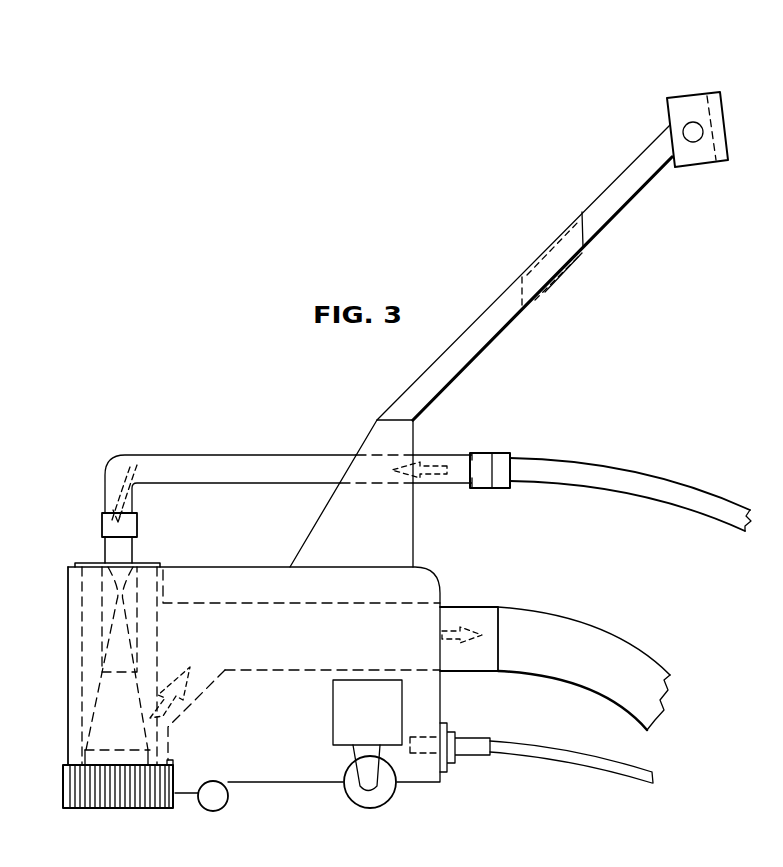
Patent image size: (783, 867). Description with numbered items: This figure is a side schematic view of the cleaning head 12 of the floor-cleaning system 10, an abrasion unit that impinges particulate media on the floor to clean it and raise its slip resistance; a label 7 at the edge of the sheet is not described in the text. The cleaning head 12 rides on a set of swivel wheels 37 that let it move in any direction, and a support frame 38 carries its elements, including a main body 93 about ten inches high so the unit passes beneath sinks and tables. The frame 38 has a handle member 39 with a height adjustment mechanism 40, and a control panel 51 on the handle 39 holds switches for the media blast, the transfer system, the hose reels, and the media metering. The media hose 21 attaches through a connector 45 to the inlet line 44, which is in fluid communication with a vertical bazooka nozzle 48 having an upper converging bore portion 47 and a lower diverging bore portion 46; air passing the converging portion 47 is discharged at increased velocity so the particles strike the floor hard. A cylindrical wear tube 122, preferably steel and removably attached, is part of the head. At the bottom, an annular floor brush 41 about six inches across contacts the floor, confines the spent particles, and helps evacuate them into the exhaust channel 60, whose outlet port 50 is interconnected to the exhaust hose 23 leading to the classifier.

The cleaning apparatus 10 is at (0, 306).
The floor surface 7 is at (9, 342).
The cleaning head 12 is at (247, 411).
The media hose 21 is at (693, 492).
The exhaust hose 23 is at (602, 643).
The swivel wheels 37 is at (216, 797).
The support frame 38 is at (402, 547).
The handle member 39 is at (632, 188).
The height adjustment mechanism 40 is at (543, 270).
The annular floor brush 41 is at (78, 794).
The air/media inlet line 44 is at (190, 458).
The connector 45 is at (498, 465).
The lower diverging bore portion 46 is at (100, 709).
The upper converging bore portion 47 is at (100, 556).
The vertical bazooka nozzle 48 is at (135, 556).
The outlet port 50 is at (474, 614).
The control panel 51 is at (722, 100).
The exhaust channel 60 is at (282, 658).
The main body 93 is at (232, 566).
The cylindrical wear tube 122 is at (80, 598).